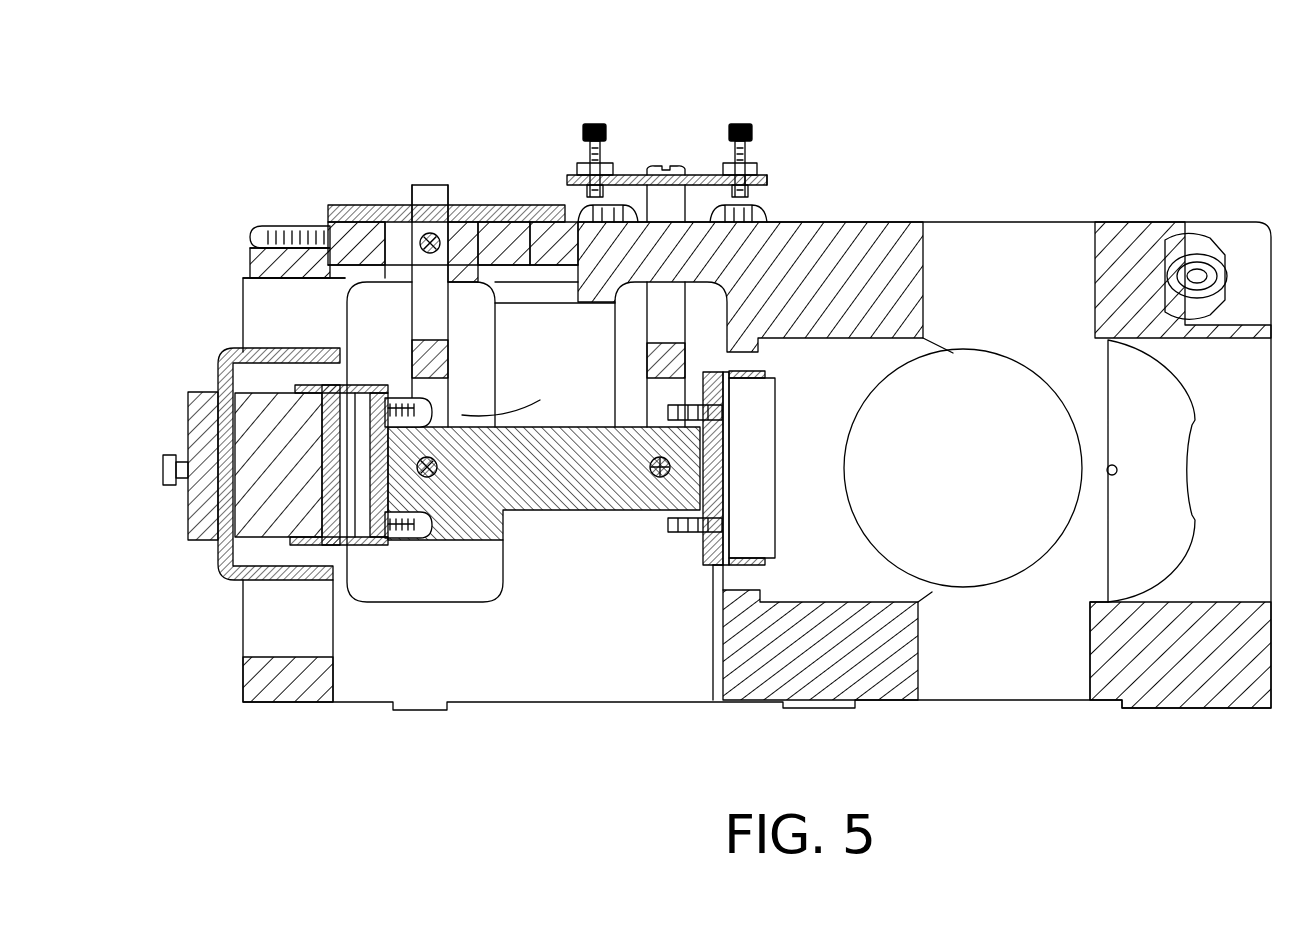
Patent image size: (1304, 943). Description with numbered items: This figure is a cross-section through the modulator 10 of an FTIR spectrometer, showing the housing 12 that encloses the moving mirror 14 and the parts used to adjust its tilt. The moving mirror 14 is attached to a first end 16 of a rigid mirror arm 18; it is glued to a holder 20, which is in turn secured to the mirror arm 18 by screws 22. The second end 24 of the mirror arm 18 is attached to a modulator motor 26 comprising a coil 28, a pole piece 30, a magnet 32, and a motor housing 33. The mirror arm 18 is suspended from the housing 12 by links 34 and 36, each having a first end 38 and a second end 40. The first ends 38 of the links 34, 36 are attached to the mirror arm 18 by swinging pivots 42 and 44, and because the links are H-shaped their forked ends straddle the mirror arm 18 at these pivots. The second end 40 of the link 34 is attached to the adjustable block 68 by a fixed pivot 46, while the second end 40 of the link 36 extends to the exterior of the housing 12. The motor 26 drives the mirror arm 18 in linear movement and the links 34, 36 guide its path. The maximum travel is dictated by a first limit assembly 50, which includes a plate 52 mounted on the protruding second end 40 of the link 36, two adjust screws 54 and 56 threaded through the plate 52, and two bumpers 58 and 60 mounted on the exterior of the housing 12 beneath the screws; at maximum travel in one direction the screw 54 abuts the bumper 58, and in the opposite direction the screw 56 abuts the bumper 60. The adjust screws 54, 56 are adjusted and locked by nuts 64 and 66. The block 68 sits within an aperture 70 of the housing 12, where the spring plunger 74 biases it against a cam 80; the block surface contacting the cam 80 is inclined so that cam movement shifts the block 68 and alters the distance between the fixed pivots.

The modulator 10 is at (912, 214).
The housing 12 is at (885, 705).
The moving mirror 14 is at (778, 435).
The first end 16 is at (686, 535).
The mirror arm 18 is at (573, 512).
The holder 20 is at (712, 568).
The screws 22 is at (729, 543).
The second end 24 is at (398, 542).
The modulator motor 26 is at (218, 392).
The coil 28 is at (377, 545).
The pole piece 30 is at (300, 440).
The magnet 32 is at (300, 546).
The motor housing 33 is at (222, 562).
The link 34 is at (450, 396).
The link 36 is at (648, 352).
The first end 38 is at (640, 425).
The second end 40 is at (412, 225).
The swinging pivot 42 is at (437, 467).
The swinging pivot 44 is at (660, 478).
The fixed pivot 46 is at (424, 253).
The first limit assembly 50 is at (565, 222).
The plate 52 is at (688, 172).
The adjust screw 54 is at (594, 122).
The adjust screw 56 is at (740, 122).
The bumper 58 is at (612, 215).
The bumper 60 is at (768, 220).
The nut 64 is at (618, 178).
The nut 66 is at (760, 176).
The block 68 is at (322, 222).
The aperture 70 is at (330, 270).
The spring plunger 74 is at (248, 240).
The cam 80 is at (508, 215).